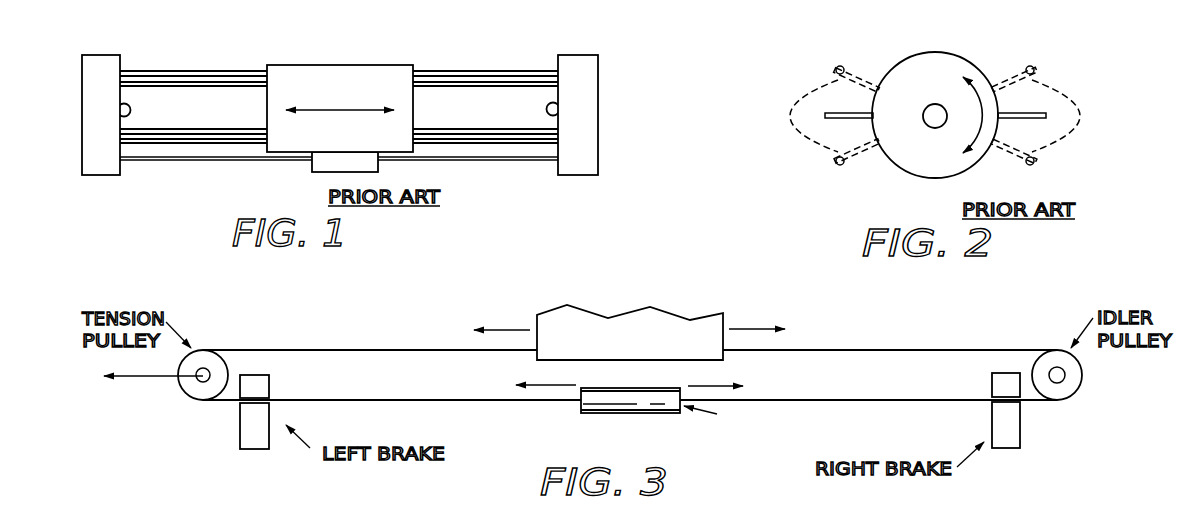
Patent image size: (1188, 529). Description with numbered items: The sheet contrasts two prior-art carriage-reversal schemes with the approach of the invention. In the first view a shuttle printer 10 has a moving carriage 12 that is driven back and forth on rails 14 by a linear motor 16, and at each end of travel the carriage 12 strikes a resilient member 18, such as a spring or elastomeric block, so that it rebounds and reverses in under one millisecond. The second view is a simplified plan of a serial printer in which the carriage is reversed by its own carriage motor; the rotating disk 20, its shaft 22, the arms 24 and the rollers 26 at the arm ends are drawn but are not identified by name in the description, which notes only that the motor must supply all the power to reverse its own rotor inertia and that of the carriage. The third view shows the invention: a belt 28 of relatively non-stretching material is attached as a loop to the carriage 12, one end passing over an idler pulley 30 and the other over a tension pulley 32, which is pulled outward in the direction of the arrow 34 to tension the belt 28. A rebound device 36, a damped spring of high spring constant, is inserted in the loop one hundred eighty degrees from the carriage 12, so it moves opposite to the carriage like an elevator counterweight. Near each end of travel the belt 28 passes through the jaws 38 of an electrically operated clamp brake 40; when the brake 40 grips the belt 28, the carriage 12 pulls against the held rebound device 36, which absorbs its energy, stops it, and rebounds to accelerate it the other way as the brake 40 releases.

In FIG. 1, the shuttle printer 10 is at (612, 103).
In FIG. 1, the carriage 12 is at (402, 122).
In FIG. 3, the carriage 12 is at (700, 334).
In FIG. 1, the rails 14 is at (182, 88).
In FIG. 1, the linear motor 16 is at (297, 165).
In FIG. 1, the resilient member 18 is at (128, 118).
In FIG. 2, the rotary disk 20 is at (897, 157).
In FIG. 2, the shaft 22 is at (934, 129).
In FIG. 2, the arm 24 is at (806, 111).
In FIG. 2, the arm end rollers 26 is at (835, 69).
In FIG. 3, the belt 28 is at (347, 349).
In FIG. 3, the idler pulley 30 is at (1053, 356).
In FIG. 3, the tension pulley 32 is at (210, 357).
In FIG. 3, the arrow 34 is at (160, 378).
In FIG. 3, the rebound device 36 is at (637, 409).
In FIG. 3, the jaws 38 is at (262, 407).
In FIG. 3, the clamp brake 40 is at (248, 437).